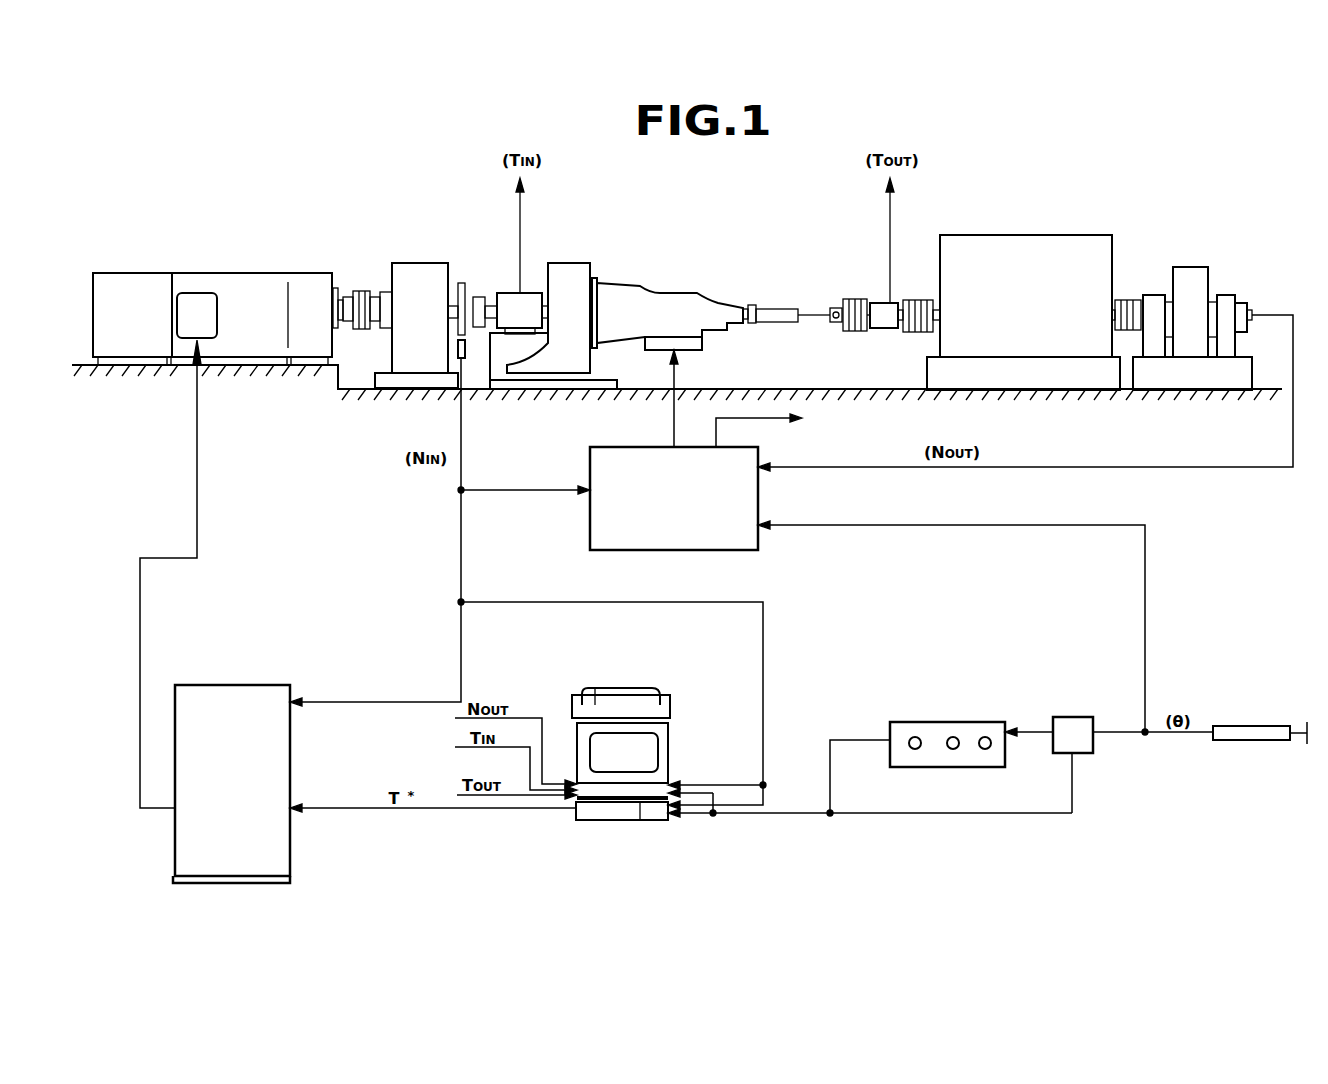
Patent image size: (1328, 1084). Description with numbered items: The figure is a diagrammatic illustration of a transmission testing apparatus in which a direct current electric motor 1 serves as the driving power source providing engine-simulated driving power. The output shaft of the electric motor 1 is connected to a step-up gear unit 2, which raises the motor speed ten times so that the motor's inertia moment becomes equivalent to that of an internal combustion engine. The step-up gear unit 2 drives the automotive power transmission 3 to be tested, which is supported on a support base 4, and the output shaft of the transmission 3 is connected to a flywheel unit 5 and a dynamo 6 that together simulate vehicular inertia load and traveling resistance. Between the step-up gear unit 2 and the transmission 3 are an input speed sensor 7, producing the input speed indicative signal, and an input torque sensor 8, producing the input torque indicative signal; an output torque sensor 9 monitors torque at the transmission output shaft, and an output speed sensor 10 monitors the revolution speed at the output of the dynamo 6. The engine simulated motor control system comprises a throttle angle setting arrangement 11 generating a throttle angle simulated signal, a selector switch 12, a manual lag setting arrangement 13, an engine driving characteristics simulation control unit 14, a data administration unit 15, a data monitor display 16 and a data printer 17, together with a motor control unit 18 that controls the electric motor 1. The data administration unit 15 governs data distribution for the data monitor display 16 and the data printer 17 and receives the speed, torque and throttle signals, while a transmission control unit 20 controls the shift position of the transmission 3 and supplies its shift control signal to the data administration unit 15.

The direct current electric motor 1 is at (281, 273).
The step-up gear unit 2 is at (428, 263).
The automotive power transmission 3 is at (700, 293).
The support base 4 is at (590, 263).
The flywheel unit 5 is at (1090, 235).
The dynamo 6 is at (1205, 267).
The revolution speed sensor (input speed sensor) 7 is at (464, 358).
The torque sensor (input torque sensor) 8 is at (511, 293).
The torque sensor (output torque sensor) 9 is at (880, 303).
The revolution speed sensor (output speed sensor) 10 is at (1250, 305).
The throttle angle setting arrangement 11 is at (1243, 726).
The selector switch 12 is at (1070, 717).
The manual lag setting arrangement 13 is at (952, 722).
The engine driving characteristics simulation control unit 14 is at (658, 820).
The data administration unit 15 is at (610, 790).
The data monitor display 16 is at (668, 740).
The data printer 17 is at (670, 705).
The motor control unit 18 is at (290, 746).
The transmission control unit 20 is at (758, 540).